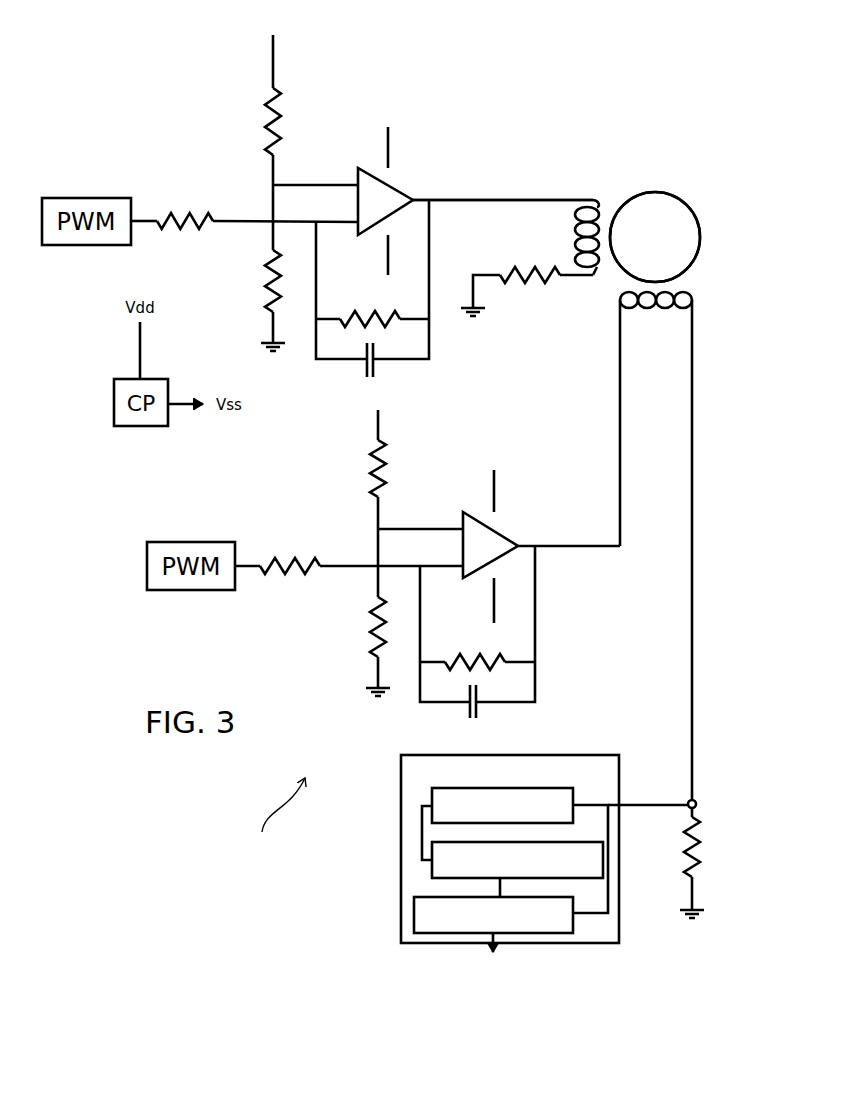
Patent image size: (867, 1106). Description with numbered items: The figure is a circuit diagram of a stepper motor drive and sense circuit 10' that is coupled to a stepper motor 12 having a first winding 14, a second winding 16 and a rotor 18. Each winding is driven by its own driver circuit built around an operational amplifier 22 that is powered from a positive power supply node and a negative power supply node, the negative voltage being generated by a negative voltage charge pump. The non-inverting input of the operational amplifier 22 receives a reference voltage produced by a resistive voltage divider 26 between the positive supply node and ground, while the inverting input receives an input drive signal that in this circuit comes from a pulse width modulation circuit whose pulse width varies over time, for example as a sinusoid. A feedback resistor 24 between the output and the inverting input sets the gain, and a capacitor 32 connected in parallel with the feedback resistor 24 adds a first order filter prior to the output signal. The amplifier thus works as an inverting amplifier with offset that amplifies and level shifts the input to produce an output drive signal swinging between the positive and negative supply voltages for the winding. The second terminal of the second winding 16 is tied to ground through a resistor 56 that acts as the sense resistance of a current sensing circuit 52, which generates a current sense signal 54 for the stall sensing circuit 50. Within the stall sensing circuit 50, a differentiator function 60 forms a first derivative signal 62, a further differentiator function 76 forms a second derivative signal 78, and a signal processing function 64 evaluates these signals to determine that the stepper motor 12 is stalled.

The stepper motor drive and sense circuit 10' is at (277, 817).
The stepper motor 12 is at (672, 160).
The first winding 14 is at (598, 205).
The second winding 16 is at (618, 294).
The rotor 18 is at (646, 247).
The operational amplifier 22 is at (396, 199).
The feedback resistor 24 is at (350, 310).
The resistive voltage divider 26 is at (233, 137).
The capacitor 32 is at (362, 364).
The stall sensing circuit 50 is at (474, 826).
The current sensing circuit 52 is at (705, 803).
The current sense signal 54 is at (676, 800).
The resistor 56 is at (700, 845).
The differentiator function 60 is at (430, 797).
The first derivative signal 62 is at (420, 832).
The signal processing function 64 is at (412, 918).
The differentiator function 76 is at (432, 848).
The second derivative signal 78 is at (497, 888).